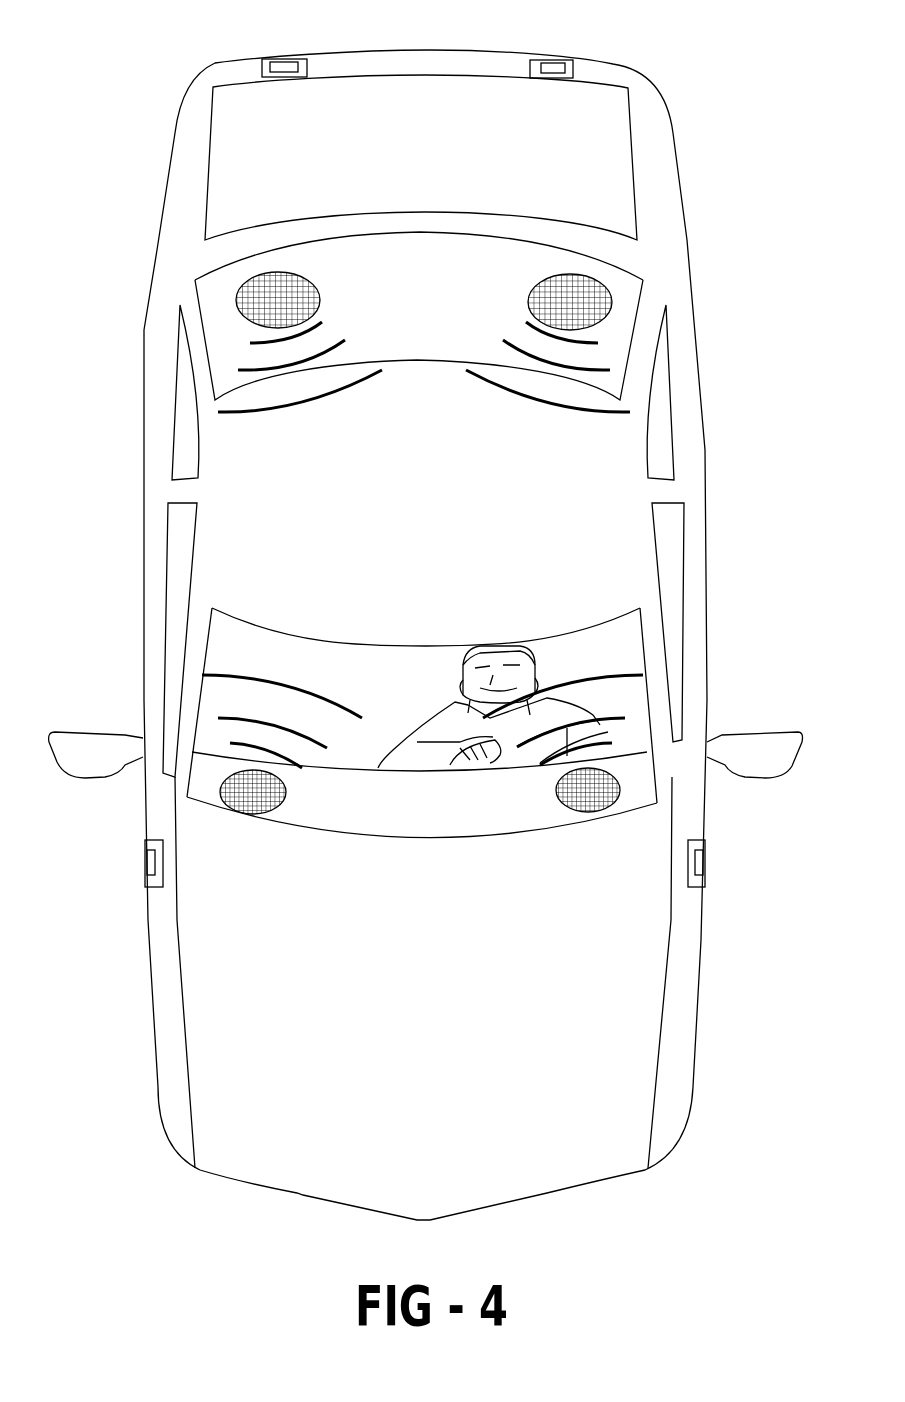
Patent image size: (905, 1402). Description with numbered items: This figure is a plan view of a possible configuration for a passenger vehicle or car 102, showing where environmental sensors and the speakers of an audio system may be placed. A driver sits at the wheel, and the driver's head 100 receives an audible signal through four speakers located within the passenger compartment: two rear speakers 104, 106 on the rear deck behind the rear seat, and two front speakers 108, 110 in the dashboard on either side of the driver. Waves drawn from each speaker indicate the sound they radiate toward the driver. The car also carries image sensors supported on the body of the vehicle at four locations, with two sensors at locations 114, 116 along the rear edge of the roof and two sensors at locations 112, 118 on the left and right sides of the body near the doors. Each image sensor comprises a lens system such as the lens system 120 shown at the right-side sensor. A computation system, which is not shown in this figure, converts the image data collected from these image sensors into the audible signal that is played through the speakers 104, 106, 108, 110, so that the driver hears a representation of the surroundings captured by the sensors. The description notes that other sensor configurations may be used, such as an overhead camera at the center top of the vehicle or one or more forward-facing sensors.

The vehicle occupant (driver) 100 is at (463, 689).
The vehicle 102 is at (455, 522).
The speaker 104 is at (262, 300).
The speaker 106 is at (583, 302).
The speaker 108 is at (251, 790).
The speaker 110 is at (598, 800).
The image sensor location 112 is at (140, 848).
The image sensor location 114 is at (300, 68).
The image sensor location 116 is at (537, 65).
The image sensor location 118 is at (703, 846).
The lens system 120 is at (705, 863).